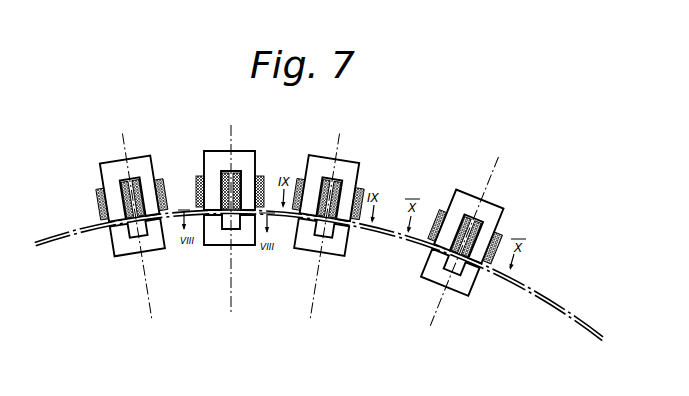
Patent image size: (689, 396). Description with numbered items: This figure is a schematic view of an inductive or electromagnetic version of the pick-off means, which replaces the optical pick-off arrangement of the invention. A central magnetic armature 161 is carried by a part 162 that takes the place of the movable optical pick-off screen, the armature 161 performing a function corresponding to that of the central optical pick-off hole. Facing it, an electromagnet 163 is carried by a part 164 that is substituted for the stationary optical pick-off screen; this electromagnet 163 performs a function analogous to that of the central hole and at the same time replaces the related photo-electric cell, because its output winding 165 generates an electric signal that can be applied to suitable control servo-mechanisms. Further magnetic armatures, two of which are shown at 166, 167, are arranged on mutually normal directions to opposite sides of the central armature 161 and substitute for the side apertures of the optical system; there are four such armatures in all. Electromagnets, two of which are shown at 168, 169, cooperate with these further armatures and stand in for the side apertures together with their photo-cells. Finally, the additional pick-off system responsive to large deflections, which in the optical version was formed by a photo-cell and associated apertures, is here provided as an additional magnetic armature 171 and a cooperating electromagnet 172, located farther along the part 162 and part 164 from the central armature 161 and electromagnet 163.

The magnetic armature 161 is at (217, 238).
The part 162 is at (543, 304).
The electromagnet 163 is at (214, 159).
The part 164 is at (557, 300).
The output winding 165 is at (258, 176).
The further magnetic armature 166 is at (126, 252).
The further magnetic armature 167 is at (305, 243).
The electromagnet 168 is at (112, 171).
The electromagnet 169 is at (350, 175).
The additional magnetic armature 171 is at (437, 275).
The cooperating electromagnet 172 is at (501, 217).